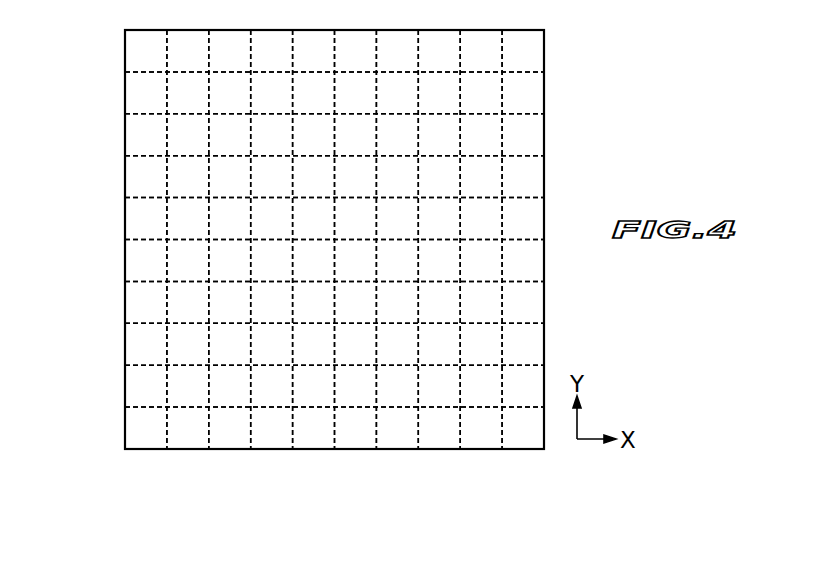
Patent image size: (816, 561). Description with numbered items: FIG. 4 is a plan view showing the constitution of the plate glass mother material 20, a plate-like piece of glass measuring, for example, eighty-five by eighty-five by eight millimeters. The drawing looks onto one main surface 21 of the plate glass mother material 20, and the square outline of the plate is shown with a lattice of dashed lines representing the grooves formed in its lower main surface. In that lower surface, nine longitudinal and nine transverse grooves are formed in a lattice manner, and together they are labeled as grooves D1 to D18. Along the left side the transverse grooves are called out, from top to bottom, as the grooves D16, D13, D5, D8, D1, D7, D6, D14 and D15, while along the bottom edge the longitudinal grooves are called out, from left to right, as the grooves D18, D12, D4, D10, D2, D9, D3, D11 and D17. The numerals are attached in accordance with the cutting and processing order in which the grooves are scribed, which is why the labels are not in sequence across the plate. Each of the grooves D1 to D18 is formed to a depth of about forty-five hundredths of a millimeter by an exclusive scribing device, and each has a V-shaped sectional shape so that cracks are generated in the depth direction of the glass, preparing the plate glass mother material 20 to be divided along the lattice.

The plate glass mother material 20 is at (566, 117).
The main surface 21 is at (358, 42).
The groove D1 is at (142, 238).
The groove D2 is at (334, 423).
The groove D3 is at (418, 423).
The groove D4 is at (251, 423).
The groove D5 is at (142, 155).
The groove D6 is at (142, 322).
The groove D7 is at (142, 280).
The groove D8 is at (142, 197).
The groove D9 is at (376, 423).
The groove D10 is at (293, 423).
The groove D11 is at (460, 423).
The groove D12 is at (209, 423).
The groove D13 is at (142, 113).
The groove D14 is at (142, 364).
The groove D15 is at (142, 406).
The groove D16 is at (142, 71).
The groove D17 is at (502, 423).
The groove D18 is at (167, 423).